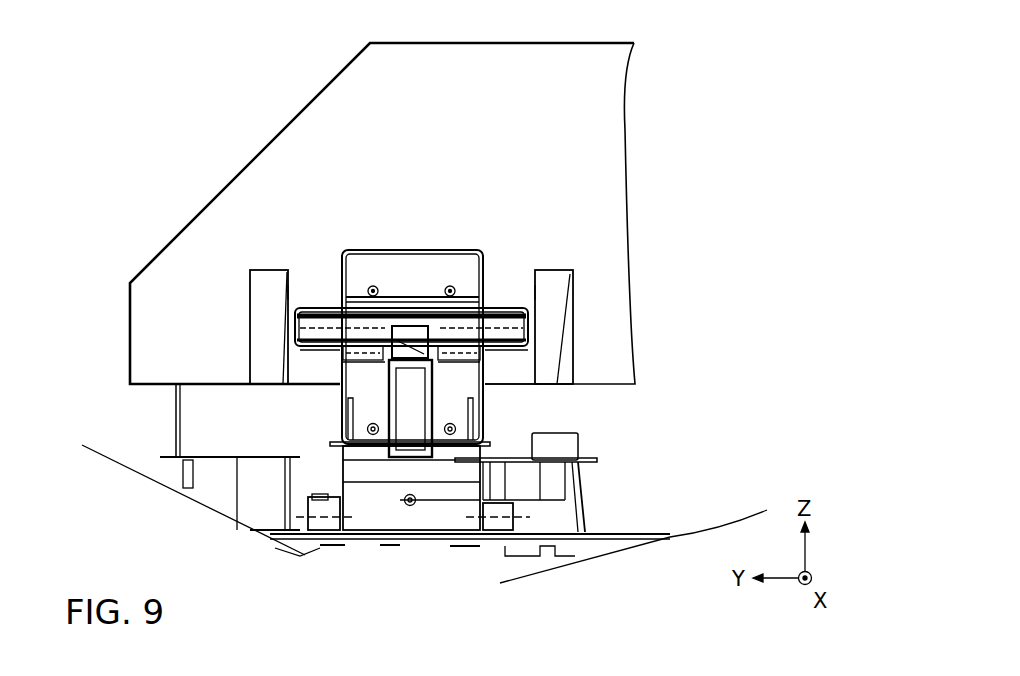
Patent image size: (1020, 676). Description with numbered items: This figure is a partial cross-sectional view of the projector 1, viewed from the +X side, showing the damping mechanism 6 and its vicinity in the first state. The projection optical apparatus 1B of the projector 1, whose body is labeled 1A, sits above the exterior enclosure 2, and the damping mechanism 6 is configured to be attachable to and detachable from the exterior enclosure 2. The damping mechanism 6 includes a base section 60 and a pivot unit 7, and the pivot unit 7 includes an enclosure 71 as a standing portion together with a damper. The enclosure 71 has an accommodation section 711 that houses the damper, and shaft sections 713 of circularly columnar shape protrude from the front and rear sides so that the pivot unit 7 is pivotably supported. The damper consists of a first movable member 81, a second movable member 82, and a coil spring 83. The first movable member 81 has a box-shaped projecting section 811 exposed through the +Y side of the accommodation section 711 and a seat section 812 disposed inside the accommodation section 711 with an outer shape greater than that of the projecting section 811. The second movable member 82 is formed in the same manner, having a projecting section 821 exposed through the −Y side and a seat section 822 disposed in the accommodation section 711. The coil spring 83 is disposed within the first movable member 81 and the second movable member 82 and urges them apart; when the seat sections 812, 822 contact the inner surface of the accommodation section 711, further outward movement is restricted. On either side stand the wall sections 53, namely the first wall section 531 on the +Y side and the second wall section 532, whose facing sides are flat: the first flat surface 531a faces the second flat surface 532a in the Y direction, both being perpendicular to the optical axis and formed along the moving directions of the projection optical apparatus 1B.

The projector 1 is at (90, 78).
The projection optical apparatus 1B is at (336, 107).
The apparatus body 1A is at (518, 515).
The exterior enclosure 2 is at (660, 537).
The damping mechanism 6 is at (436, 390).
The pivot unit 7 is at (462, 222).
The enclosure 71 is at (410, 353).
The accommodation section 711 is at (380, 252).
The shaft section 713 is at (326, 494).
The support member 53 is at (438, 327).
The first wall section 531 is at (261, 333).
The first flat surface 531a is at (293, 289).
The second wall section 532 is at (568, 333).
The second flat surface 532a is at (528, 292).
The base section 60 is at (551, 531).
The first movable member 81 is at (319, 309).
The projecting section 811 is at (325, 352).
The seat section 812 is at (352, 401).
The second movable member 82 is at (486, 302).
The projecting section 821 is at (517, 348).
The seat section 822 is at (472, 372).
The coil spring 83 is at (417, 318).